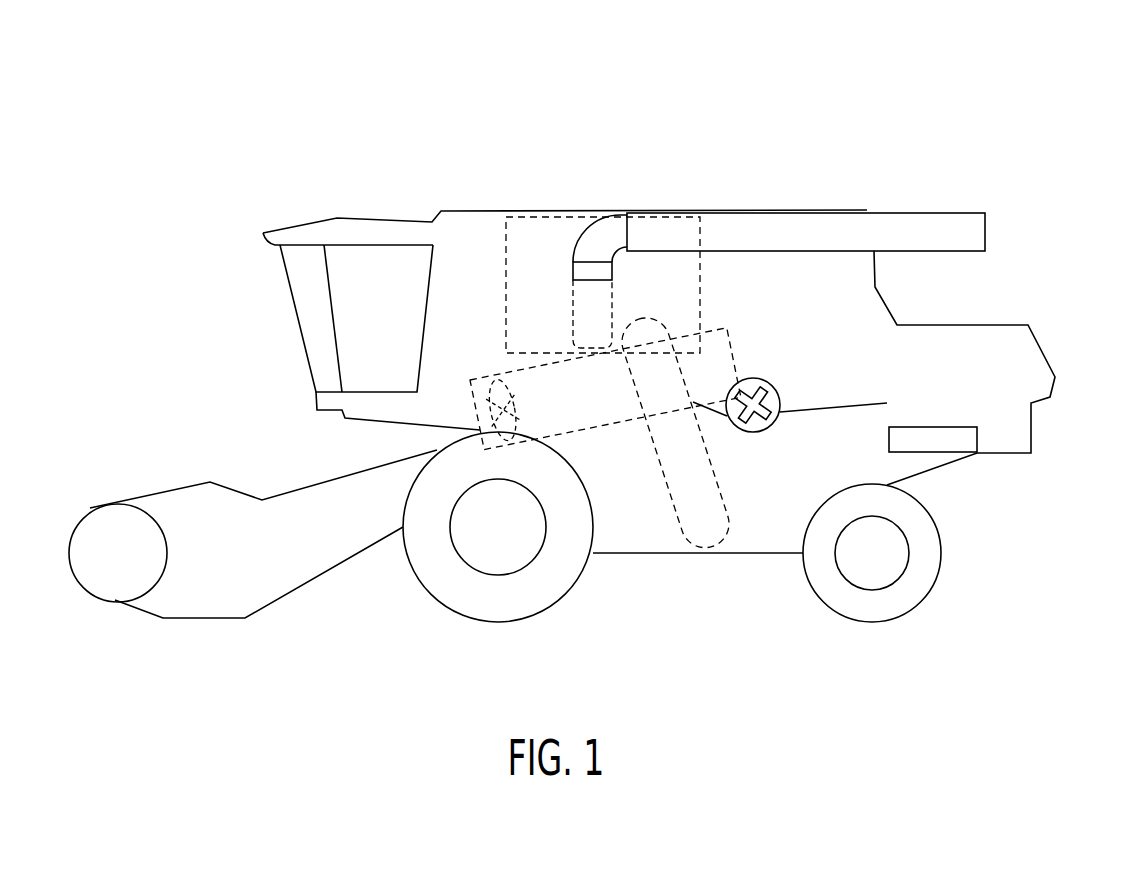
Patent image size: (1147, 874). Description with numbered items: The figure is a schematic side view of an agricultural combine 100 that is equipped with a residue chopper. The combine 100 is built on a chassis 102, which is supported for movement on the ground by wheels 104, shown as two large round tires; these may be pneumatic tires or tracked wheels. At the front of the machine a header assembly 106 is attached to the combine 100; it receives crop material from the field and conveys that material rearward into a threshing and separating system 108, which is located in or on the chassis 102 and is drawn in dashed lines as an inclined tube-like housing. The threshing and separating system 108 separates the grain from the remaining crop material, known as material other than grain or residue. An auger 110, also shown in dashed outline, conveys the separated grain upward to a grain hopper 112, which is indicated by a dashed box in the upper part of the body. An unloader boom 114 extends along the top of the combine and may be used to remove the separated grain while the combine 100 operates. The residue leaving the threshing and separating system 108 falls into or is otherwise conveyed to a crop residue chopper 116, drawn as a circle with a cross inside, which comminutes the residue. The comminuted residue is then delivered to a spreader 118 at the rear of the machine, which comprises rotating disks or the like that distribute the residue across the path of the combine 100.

The agricultural combine 100 is at (1008, 142).
The chassis 102 is at (765, 535).
The wheels 104 is at (547, 592).
The header assembly 106 is at (283, 505).
The threshing and separating system 108 is at (607, 420).
The auger 110 is at (727, 560).
The grain hopper 112 is at (553, 216).
The unloader boom 114 is at (784, 225).
The crop residue chopper 116 is at (775, 393).
The spreader 118 is at (977, 433).